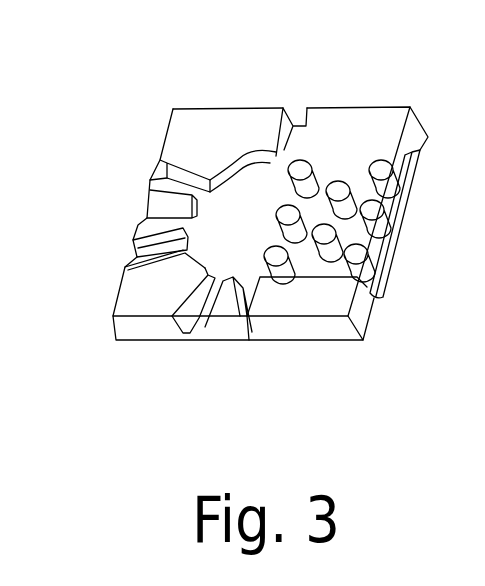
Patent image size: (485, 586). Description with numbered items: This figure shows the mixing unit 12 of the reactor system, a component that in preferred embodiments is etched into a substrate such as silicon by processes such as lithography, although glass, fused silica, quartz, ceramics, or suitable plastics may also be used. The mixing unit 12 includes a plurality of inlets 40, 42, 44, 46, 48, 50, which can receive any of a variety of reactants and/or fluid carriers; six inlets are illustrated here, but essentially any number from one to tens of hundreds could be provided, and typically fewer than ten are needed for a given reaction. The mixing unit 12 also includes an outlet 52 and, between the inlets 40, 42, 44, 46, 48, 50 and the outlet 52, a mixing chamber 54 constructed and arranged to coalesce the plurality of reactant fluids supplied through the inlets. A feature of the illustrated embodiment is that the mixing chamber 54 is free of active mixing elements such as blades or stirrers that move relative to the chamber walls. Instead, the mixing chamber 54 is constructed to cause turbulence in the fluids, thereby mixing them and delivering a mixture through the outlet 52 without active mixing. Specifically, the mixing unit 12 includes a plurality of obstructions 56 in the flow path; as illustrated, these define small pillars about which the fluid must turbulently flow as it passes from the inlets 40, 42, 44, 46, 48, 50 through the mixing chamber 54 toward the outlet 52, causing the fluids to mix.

The mixing unit 12 is at (199, 78).
The inlet 40 is at (298, 94).
The inlet 42 is at (146, 161).
The inlet 44 is at (128, 219).
The inlet 46 is at (125, 262).
The inlet 48 is at (183, 345).
The inlet 50 is at (242, 344).
The outlet 52 is at (409, 237).
The mixing chamber 54 is at (306, 194).
The obstructions 56 is at (386, 160).